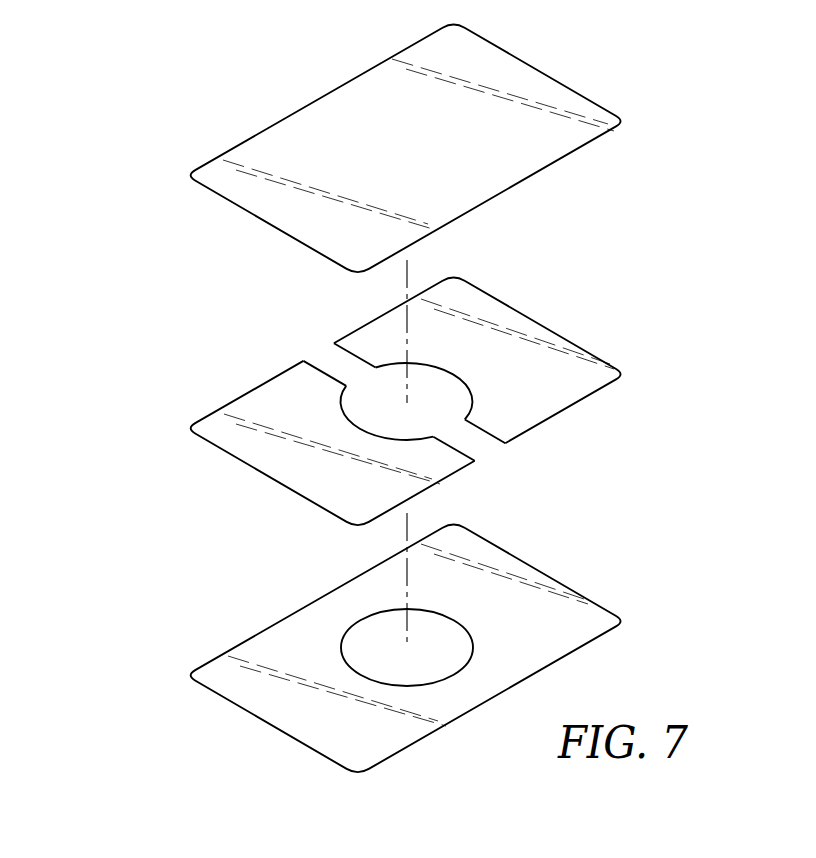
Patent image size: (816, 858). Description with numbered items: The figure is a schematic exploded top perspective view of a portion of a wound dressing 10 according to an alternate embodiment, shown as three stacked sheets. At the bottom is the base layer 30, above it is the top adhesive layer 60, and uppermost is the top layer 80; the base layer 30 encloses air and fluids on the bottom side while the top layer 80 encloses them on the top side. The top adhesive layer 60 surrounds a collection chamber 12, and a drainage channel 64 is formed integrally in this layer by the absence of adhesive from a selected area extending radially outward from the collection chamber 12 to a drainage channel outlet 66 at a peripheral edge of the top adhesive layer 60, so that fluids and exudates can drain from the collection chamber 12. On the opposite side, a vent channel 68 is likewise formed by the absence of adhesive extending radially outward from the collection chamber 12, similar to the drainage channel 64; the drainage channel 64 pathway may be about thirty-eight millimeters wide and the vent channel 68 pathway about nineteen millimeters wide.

The wound dressing 10 is at (125, 276).
The top layer 80 is at (570, 53).
The top adhesive layer 60 is at (578, 289).
The collection chamber 12 is at (387, 395).
The drainage channel 64 is at (459, 436).
The drainage channel outlet 66 is at (481, 447).
The vent channel 68 is at (340, 369).
The base layer 30 is at (547, 556).